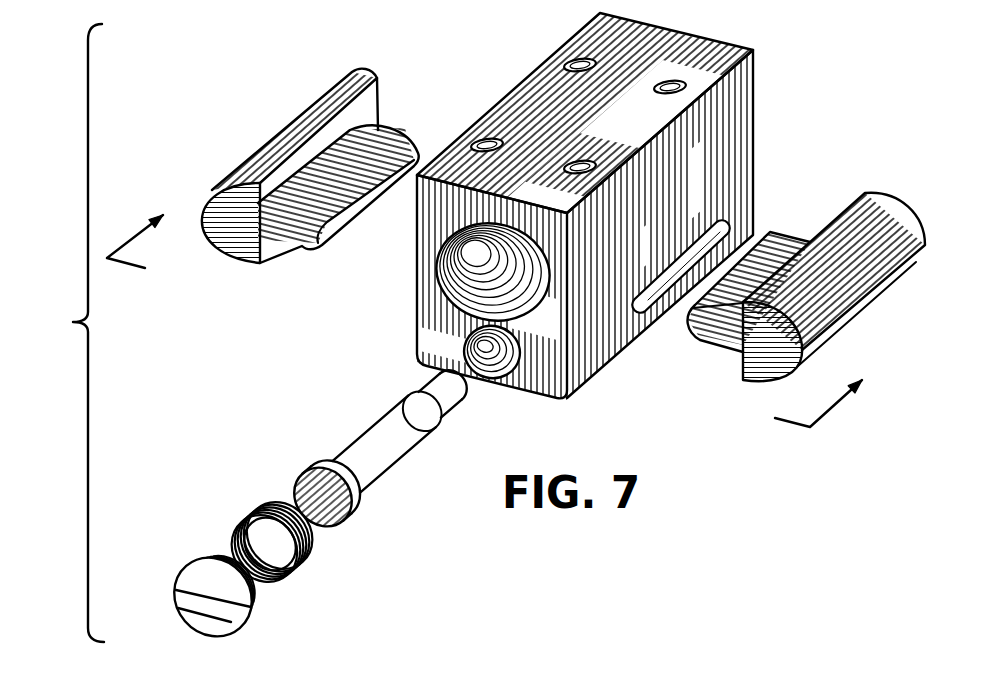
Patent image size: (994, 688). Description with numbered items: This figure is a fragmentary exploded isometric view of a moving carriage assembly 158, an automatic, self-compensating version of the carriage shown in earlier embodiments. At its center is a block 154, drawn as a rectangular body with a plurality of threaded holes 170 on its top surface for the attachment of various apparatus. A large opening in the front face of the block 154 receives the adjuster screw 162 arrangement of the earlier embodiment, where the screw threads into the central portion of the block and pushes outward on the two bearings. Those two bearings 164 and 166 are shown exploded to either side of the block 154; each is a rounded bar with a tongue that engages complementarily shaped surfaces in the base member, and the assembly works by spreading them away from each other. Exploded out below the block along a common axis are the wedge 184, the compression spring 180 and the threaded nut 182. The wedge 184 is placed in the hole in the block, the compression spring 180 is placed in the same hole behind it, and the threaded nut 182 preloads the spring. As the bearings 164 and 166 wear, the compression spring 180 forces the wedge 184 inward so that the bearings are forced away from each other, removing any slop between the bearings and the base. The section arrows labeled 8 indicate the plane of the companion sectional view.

The section line 8-8 indicator 8 is at (493, 308).
The block 154 is at (738, 138).
The moving carriage assembly 158 is at (62, 336).
The adjuster screw 162 is at (480, 280).
The bearing 164 is at (307, 125).
The bearing 166 is at (893, 228).
The threaded holes 170 is at (667, 80).
The compression spring 180 is at (263, 517).
The threaded nut 182 is at (210, 567).
The wedge 184 is at (383, 432).